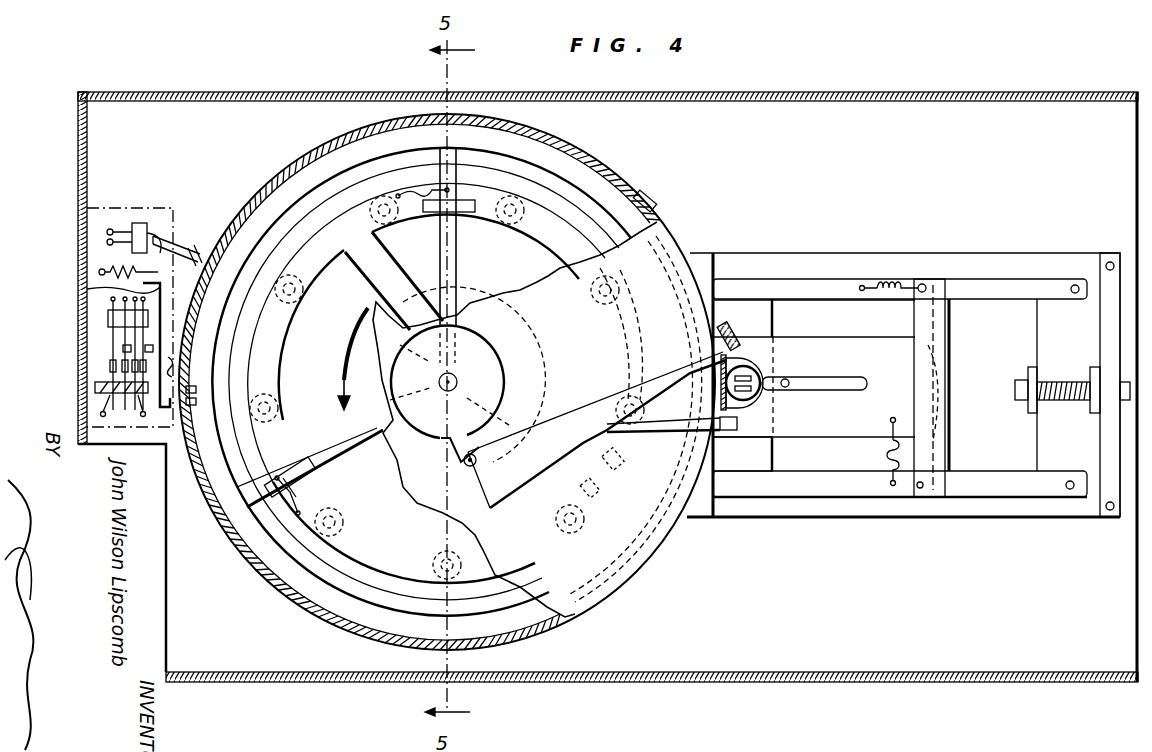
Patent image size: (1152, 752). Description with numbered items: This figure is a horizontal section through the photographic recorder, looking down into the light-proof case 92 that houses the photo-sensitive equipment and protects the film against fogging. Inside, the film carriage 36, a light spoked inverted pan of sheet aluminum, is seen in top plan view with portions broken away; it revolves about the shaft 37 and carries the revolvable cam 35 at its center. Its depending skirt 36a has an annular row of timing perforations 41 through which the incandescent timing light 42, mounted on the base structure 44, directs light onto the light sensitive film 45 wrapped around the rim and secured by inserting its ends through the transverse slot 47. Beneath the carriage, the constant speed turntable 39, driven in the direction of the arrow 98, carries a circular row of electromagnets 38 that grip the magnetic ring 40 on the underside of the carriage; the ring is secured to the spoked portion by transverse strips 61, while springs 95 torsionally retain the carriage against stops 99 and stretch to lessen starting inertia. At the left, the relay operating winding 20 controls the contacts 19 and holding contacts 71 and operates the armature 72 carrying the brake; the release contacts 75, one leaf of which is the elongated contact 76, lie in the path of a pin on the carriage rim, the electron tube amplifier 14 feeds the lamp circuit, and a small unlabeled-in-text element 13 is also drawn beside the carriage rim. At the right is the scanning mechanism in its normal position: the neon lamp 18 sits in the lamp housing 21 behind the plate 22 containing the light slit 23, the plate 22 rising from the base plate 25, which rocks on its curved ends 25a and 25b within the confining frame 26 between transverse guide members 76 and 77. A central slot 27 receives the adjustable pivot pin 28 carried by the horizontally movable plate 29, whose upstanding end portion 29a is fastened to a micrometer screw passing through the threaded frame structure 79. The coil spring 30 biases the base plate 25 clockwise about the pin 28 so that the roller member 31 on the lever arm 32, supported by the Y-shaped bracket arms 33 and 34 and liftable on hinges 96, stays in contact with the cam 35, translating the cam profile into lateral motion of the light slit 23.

The light-proof case 92 is at (884, 101).
The timing perforations 41 is at (582, 160).
The light sensitive film 45 is at (671, 208).
The transverse slot 47 is at (658, 183).
The depending skirt 36a is at (282, 155).
The film carriage 36 is at (528, 295).
The magnetic ring 40 is at (330, 345).
The turntable 39 is at (335, 575).
The cam 35 is at (460, 352).
The shaft 37 is at (470, 375).
The transverse strips 61 is at (433, 212).
The electromagnets 38 is at (504, 220).
The springs 95 is at (398, 200).
The stops 99 is at (300, 480).
The arrow 98 is at (340, 359).
The electron tube amplifier 14 is at (197, 388).
The clip 13 is at (197, 400).
The elongated contact 76 is at (152, 240).
The release contacts 75 is at (188, 250).
The armature member 72 is at (87, 290).
The holding contacts 71 is at (105, 325).
The contacts 19 is at (112, 345).
The relay operating winding 20 is at (95, 393).
The base structure 44 is at (852, 272).
The timing light 42 is at (730, 278).
The base plate 25 is at (848, 430).
The curved end 25a is at (742, 454).
The curved end 25b is at (940, 358).
The confining frame 26 is at (783, 505).
The horizontally movable plate 29 is at (850, 505).
The coil spring 30 is at (893, 500).
The transverse guide member 77 is at (935, 505).
The neon lamp 18 is at (745, 378).
The threaded frame structure 79 is at (1094, 368).
The upstanding end portion 29a is at (1028, 412).
The lamp housing 21 is at (760, 372).
The adjustable pivot pin 28 is at (810, 378).
The slot 27 is at (860, 392).
The Y-shaped bracket arm 34 is at (738, 424).
The Y-shaped bracket arm 33 is at (740, 330).
The hinges 96 is at (756, 325).
The roller member 31 is at (464, 467).
The lever arm 32 is at (568, 440).
The plate 22 is at (700, 372).
The light slit 23 is at (715, 350).